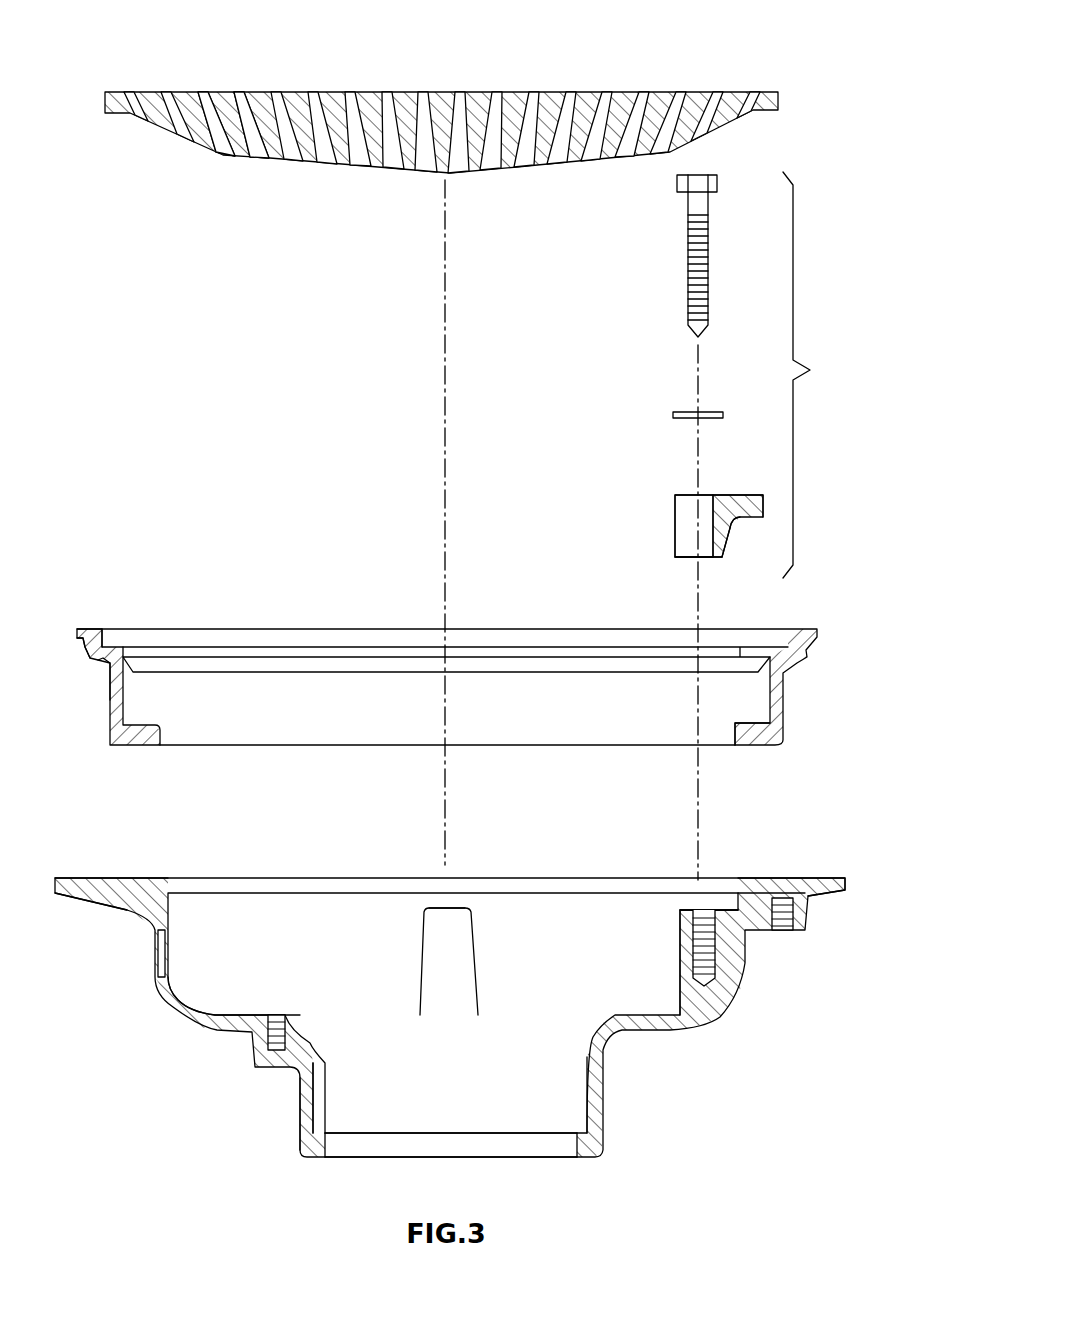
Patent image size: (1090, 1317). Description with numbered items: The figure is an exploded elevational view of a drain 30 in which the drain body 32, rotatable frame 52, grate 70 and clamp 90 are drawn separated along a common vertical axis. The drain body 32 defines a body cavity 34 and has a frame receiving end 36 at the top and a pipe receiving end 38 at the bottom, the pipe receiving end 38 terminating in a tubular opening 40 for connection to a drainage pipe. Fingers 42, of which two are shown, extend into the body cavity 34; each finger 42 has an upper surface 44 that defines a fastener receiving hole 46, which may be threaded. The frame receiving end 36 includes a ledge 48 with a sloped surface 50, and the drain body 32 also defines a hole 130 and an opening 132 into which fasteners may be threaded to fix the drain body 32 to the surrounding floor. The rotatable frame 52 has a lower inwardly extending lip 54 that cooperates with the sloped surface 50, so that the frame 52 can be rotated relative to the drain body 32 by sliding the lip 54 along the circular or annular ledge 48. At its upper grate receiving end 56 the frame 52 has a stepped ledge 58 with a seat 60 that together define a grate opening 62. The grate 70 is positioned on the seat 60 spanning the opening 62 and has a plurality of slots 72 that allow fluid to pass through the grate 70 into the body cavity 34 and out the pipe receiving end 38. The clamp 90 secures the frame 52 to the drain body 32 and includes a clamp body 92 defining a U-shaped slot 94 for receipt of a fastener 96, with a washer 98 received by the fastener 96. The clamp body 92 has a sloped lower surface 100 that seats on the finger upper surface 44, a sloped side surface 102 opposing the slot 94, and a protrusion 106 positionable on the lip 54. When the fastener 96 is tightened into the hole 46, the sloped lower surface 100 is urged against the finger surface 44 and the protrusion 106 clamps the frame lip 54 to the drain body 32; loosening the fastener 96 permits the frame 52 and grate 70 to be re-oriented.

The drain 30 is at (690, 52).
The drain body 32 is at (449, 1016).
The body cavity 34 is at (217, 980).
The frame receiving end 36 is at (53, 885).
The pipe receiving end 38 is at (302, 1113).
The tubular opening 40 is at (362, 1147).
The fingers 42 is at (475, 980).
The upper surface 44 is at (447, 906).
The fastener receiving holes 46 is at (693, 935).
The ledge 48 is at (848, 878).
The sloped surface 50 is at (778, 890).
The rotatable frame 52 is at (451, 684).
The lower inwardly extending lip 54 is at (742, 742).
The upper grate receiving end 56 is at (88, 655).
The stepped ledge 58 is at (97, 628).
The seat 60 is at (113, 652).
The grate opening 62 is at (217, 645).
The grate 70 is at (796, 97).
The slots 72 is at (207, 128).
The clamp 90 is at (815, 375).
The clamp body 92 is at (688, 514).
The U-shaped slot 94 is at (702, 524).
The fastener 96 is at (688, 280).
The washer 98 is at (674, 415).
The sloped lower surface 100 is at (705, 559).
The side surface 102 is at (733, 535).
The protrusion 106 is at (737, 494).
The hole 130 is at (779, 930).
The opening 132 is at (152, 948).